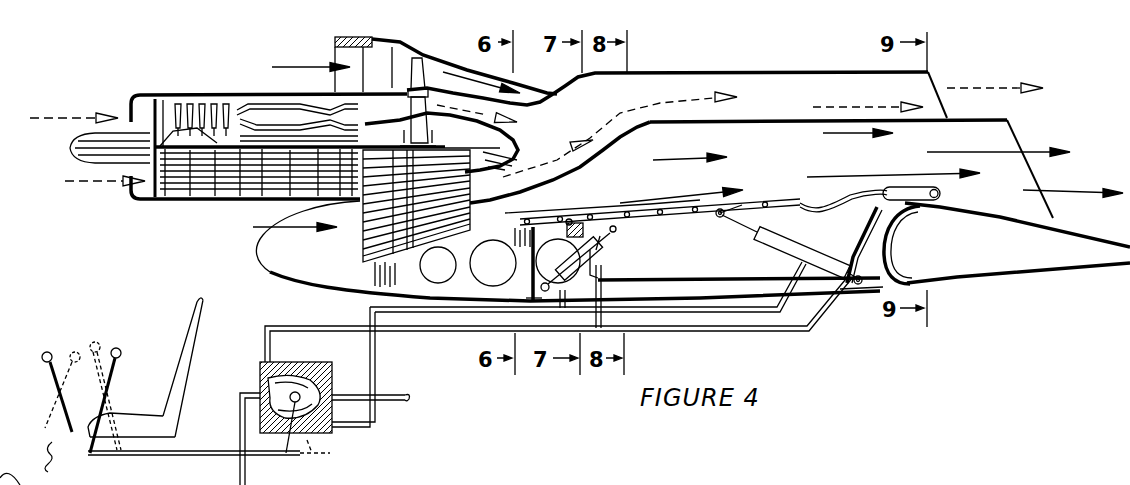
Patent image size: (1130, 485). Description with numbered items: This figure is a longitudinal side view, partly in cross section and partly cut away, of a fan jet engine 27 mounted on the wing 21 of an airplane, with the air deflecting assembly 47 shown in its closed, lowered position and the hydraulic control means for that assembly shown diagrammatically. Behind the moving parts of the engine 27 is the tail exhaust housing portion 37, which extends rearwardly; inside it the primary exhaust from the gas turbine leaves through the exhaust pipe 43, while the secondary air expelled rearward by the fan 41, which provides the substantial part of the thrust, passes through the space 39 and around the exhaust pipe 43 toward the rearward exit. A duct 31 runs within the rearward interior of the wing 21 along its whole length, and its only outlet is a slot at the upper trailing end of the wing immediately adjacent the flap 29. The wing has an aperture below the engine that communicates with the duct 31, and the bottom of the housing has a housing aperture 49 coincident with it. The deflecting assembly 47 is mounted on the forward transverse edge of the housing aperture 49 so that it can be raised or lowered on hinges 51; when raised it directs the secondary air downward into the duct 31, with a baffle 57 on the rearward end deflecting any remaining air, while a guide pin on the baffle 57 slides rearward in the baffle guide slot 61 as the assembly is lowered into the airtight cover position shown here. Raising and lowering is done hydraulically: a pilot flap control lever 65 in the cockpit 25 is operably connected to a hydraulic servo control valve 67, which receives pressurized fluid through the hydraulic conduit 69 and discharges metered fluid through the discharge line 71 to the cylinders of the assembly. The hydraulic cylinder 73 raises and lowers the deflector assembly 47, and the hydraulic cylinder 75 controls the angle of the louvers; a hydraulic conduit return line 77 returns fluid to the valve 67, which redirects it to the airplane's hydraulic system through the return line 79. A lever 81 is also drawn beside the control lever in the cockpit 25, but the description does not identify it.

The wing 21 is at (733, 296).
The cockpit 25 is at (88, 342).
The fan jet engine 27 is at (220, 93).
The flap 29 is at (1093, 257).
The duct 31 is at (682, 266).
The tail exhaust housing portion 37 is at (741, 70).
The space 39 is at (801, 165).
The fan 41 is at (432, 54).
The exhaust pipe 43 is at (804, 92).
The air deflecting assembly 47 is at (660, 210).
The housing aperture 49 is at (600, 238).
The hinges 51 is at (569, 220).
The baffle 57 is at (838, 205).
The baffle guide slot 61 is at (940, 192).
The pilot flap control lever 65 is at (117, 365).
The hydraulic servo control valve 67 is at (262, 372).
The hydraulic conduit 69 is at (246, 477).
The discharge line 71 is at (378, 365).
The hydraulic cylinder 73 is at (797, 248).
The hydraulic cylinder 75 is at (600, 268).
The hydraulic conduit return line 77 is at (700, 313).
The return line 79 is at (398, 400).
The throttle lever 81 is at (46, 353).